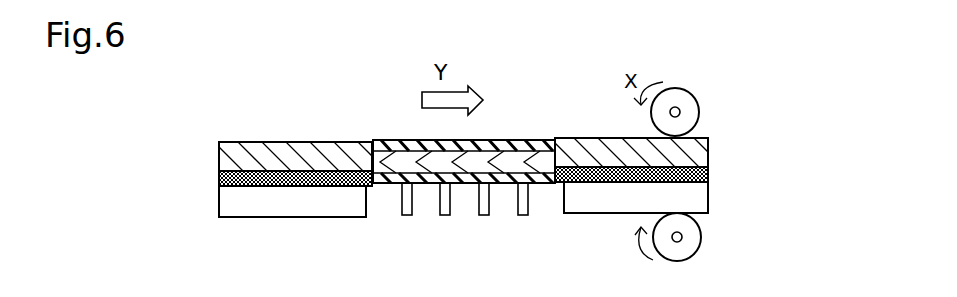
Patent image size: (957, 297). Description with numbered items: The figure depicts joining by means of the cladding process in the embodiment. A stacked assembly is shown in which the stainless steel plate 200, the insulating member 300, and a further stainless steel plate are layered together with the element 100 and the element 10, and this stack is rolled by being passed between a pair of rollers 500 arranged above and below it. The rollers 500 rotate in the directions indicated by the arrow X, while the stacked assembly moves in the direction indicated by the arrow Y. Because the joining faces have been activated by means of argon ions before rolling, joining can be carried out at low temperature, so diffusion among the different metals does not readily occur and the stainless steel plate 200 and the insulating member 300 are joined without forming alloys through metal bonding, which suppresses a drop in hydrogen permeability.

The electronic component (chip) with leads 10 is at (546, 139).
The upper layer (substrate / cover layer) 100 is at (710, 150).
The stainless steel plate 200 is at (708, 195).
The insulating member 300 is at (708, 172).
The rollers 500 is at (698, 103).